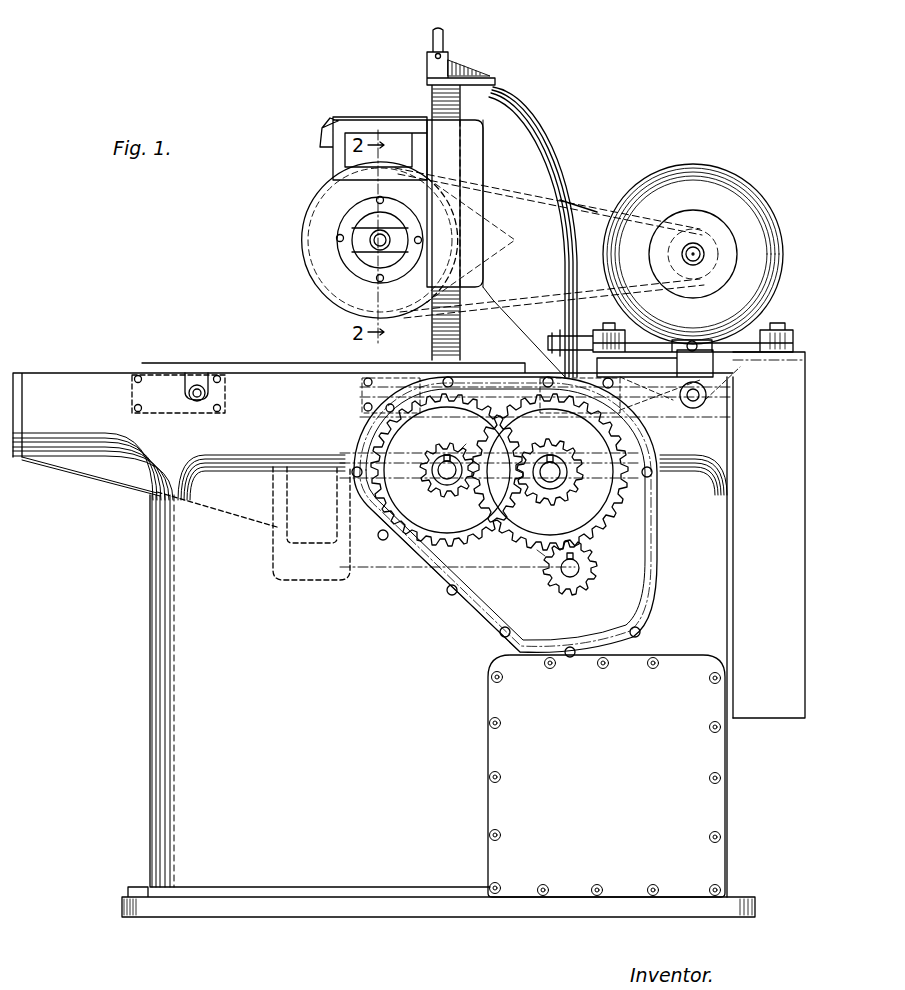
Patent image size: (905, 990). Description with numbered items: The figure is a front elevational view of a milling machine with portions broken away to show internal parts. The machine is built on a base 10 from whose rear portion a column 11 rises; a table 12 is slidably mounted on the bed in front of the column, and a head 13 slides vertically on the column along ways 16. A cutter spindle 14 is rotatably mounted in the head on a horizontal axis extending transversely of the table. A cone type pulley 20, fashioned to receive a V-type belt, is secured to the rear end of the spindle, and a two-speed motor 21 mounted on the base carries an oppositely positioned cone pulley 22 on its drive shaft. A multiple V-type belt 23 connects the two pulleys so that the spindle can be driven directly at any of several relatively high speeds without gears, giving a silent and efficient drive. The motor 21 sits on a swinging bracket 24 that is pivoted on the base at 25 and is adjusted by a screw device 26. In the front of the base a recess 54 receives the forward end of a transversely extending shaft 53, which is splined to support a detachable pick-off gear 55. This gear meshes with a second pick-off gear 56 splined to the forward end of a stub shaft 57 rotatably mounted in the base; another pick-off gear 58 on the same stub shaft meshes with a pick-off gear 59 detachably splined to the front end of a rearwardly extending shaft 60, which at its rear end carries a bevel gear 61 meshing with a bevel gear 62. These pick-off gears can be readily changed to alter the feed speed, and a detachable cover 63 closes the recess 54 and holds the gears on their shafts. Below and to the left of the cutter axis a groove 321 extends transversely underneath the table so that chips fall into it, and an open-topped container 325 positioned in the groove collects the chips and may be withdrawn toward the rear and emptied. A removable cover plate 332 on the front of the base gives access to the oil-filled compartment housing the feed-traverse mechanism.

The base 10 is at (183, 717).
The column 11 is at (537, 147).
The table 12 is at (215, 370).
The head 13 is at (460, 130).
The cutter spindle 14 is at (357, 243).
The ways 16 is at (437, 97).
The cone type pulley 20 is at (312, 213).
The two-speed motor 21 is at (717, 180).
The cone pulley 22 is at (720, 237).
The multiple V-type belt 23 is at (592, 202).
The swinging bracket 24 is at (740, 370).
The pivot 25 is at (700, 405).
The screw device 26 is at (552, 340).
The transversely extending shaft 53 is at (573, 577).
The recess 54 is at (497, 580).
The pick-off gear 55 is at (585, 563).
The pick-off gear 56 is at (537, 550).
The stub shaft 57 is at (553, 488).
The pick-off gear 58 is at (570, 468).
The pick-off gear 59 is at (460, 543).
The rearwardly extending shaft 60 is at (447, 480).
The bevel gear 61 is at (447, 458).
The bevel gear 62 is at (460, 454).
The detachable cover 63 is at (497, 617).
The groove 321 is at (277, 527).
The container 325 is at (290, 507).
The removable cover plate 332 is at (703, 795).